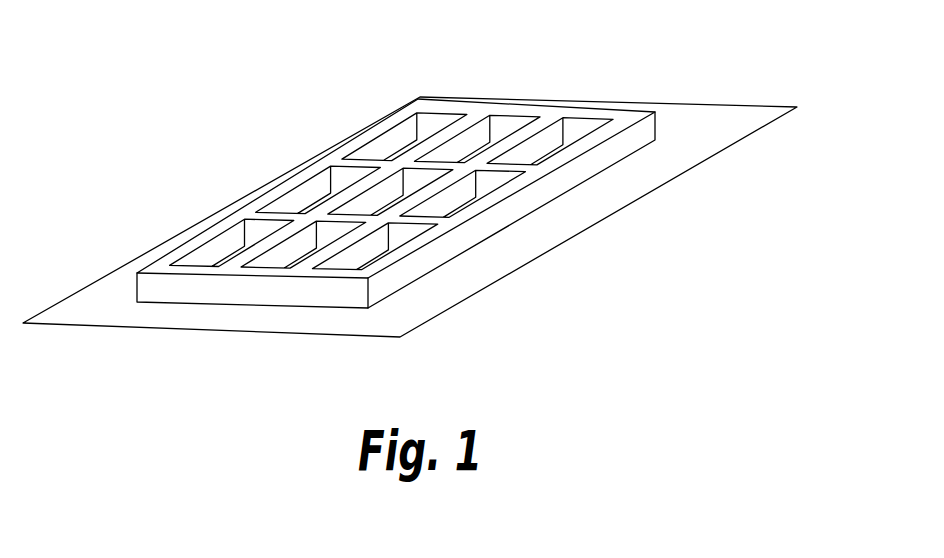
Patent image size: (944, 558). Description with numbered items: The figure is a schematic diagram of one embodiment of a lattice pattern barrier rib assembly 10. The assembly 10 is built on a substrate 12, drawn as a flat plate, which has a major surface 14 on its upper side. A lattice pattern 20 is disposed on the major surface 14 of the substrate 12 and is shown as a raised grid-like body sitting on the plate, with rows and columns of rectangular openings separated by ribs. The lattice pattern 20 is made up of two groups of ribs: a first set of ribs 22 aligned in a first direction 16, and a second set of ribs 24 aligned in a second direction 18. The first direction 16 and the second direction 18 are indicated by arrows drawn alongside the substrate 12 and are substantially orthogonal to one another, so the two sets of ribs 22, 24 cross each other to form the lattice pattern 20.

The lattice pattern barrier rib assembly 10 is at (741, 45).
The substrate 12 is at (410, 234).
The major surface 14 is at (443, 294).
The first direction 16 is at (845, 166).
The second direction 18 is at (300, 399).
The lattice pattern 20 is at (520, 205).
The first set of ribs 22 is at (415, 99).
The second set of ribs 24 is at (128, 268).